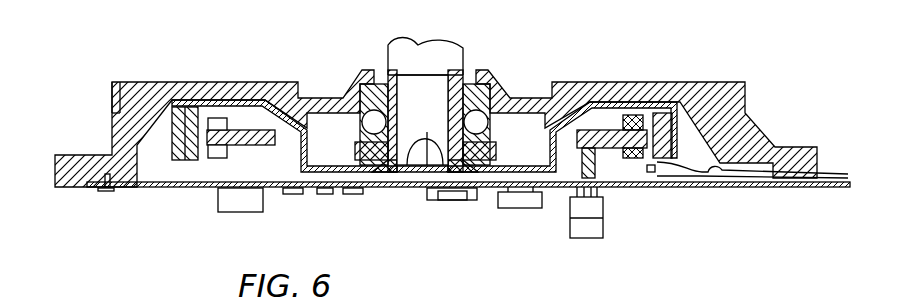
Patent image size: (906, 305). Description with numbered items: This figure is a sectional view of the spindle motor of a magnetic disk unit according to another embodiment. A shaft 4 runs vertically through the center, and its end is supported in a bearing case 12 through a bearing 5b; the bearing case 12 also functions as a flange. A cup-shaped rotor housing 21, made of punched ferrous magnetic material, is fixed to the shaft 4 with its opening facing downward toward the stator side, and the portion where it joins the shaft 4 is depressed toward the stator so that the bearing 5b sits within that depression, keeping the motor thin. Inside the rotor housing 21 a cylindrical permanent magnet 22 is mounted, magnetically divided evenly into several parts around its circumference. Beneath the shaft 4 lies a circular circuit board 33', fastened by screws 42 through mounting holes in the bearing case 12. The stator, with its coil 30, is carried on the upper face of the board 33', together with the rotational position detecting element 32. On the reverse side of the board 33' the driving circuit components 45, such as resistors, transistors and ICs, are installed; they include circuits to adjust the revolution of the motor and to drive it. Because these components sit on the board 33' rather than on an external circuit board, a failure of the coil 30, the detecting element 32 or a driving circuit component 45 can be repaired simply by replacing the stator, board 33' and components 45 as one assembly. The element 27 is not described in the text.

The shaft 4 is at (463, 60).
The bearing 5b is at (353, 98).
The bearing case 12 is at (763, 143).
The rotor housing 21 is at (677, 110).
The magnet 22 is at (703, 168).
The magnet assembly 27 is at (610, 140).
The coil 30 is at (622, 147).
The rotational position detecting element 32 is at (657, 172).
The board 33' is at (713, 214).
The screws 42 is at (107, 192).
The driving circuit components 45 is at (258, 212).